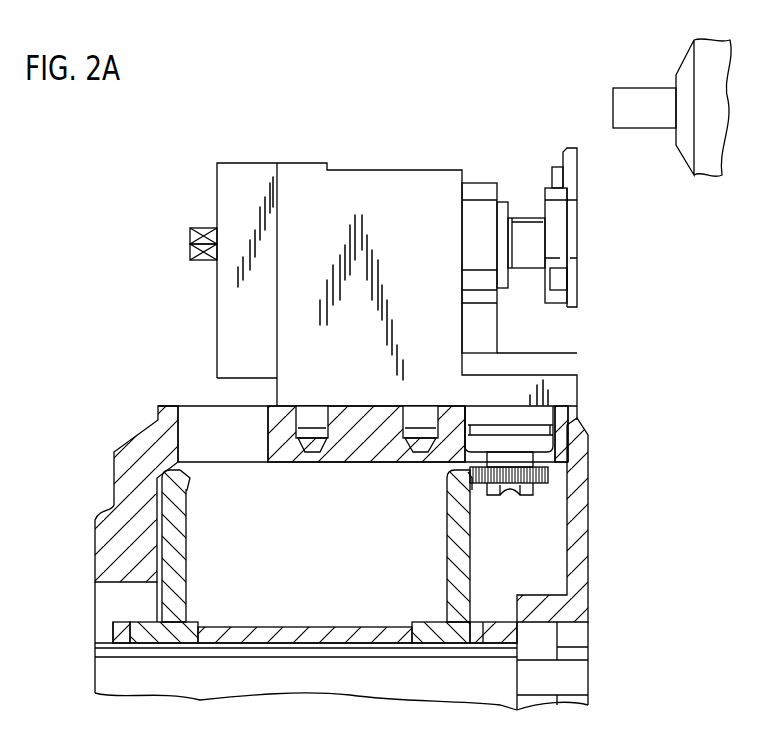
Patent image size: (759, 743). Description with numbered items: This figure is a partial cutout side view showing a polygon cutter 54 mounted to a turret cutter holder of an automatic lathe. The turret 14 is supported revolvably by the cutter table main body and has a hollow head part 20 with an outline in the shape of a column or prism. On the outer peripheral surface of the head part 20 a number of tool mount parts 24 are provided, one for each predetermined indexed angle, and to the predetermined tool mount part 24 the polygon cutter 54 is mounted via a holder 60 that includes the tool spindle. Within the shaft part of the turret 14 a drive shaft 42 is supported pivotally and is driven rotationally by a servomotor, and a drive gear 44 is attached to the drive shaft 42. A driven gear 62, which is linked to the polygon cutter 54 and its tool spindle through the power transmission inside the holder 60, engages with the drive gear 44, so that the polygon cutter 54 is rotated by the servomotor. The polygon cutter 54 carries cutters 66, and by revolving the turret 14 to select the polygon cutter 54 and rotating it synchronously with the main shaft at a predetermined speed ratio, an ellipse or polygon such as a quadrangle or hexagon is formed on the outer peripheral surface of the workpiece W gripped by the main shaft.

The workpiece W is at (630, 87).
The turret 14 is at (590, 568).
The head part 20 is at (198, 405).
The tool mount part 24 is at (343, 405).
The drive shaft 42 is at (265, 665).
The drive gear 44 is at (447, 535).
The polygon cutter 54 is at (545, 185).
The holder 60 is at (365, 192).
The driven gear 62 is at (548, 475).
The cutter 66 is at (567, 148).